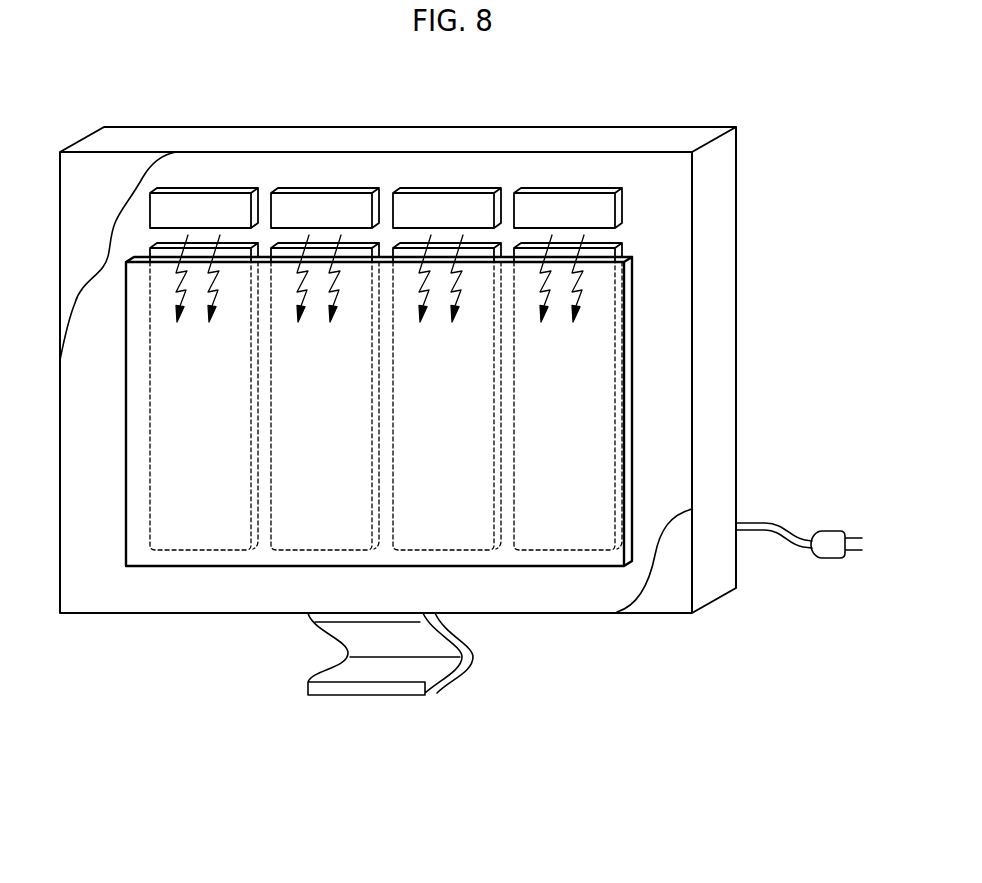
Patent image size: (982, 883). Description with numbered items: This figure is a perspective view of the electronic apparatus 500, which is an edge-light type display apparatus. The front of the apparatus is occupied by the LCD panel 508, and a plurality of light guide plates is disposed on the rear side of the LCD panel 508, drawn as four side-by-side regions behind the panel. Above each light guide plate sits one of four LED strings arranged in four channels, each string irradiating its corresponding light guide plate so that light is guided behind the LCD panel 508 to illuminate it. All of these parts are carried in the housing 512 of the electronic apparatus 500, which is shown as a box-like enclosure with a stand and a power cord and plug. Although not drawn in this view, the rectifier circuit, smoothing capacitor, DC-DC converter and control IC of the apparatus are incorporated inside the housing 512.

The LCD panel 508 is at (633, 345).
The housing 512 is at (720, 216).
The electronic apparatus 500 is at (468, 768).